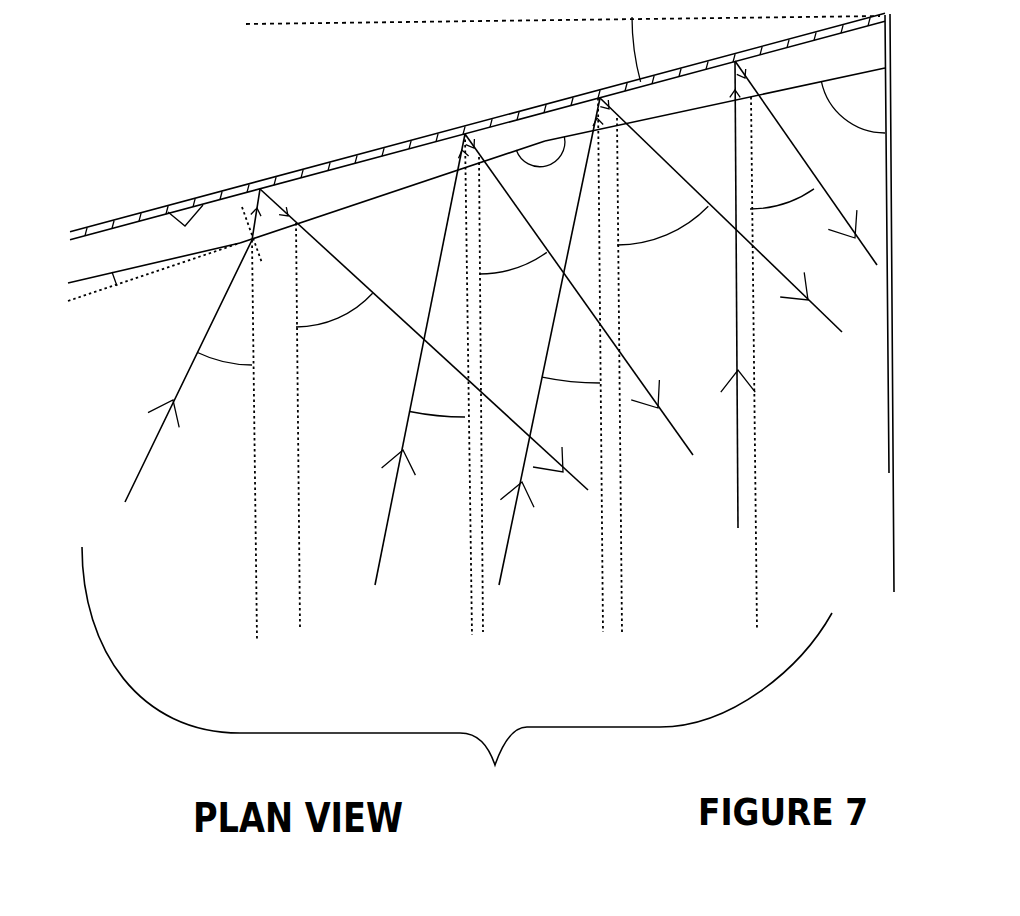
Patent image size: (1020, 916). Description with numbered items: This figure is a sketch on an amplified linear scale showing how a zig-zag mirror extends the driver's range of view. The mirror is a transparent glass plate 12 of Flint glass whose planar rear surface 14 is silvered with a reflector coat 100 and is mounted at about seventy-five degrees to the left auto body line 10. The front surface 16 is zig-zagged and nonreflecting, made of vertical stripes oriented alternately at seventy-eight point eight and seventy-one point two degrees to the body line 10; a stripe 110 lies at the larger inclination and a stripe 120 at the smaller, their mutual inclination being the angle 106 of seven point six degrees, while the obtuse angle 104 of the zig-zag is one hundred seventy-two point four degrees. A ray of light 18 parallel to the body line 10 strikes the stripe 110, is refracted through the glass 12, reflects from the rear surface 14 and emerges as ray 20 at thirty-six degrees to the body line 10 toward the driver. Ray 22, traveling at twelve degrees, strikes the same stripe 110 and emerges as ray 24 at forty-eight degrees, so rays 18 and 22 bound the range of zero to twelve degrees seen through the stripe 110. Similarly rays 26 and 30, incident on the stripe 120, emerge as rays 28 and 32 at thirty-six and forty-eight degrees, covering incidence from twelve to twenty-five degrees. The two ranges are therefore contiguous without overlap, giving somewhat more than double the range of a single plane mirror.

The auto body line 10 is at (893, 510).
The glass plate 12 is at (477, 307).
The rear surface 14 is at (168, 212).
The front surface 16 is at (457, 674).
The ray of light 18 is at (735, 322).
The emerging ray 20 is at (807, 345).
The ray 22 is at (551, 365).
The emerging ray 24 is at (721, 365).
The ray 26 is at (414, 389).
The emerging ray 28 is at (588, 383).
The ray 30 is at (192, 414).
The emerging ray 32 is at (427, 408).
The reflector coat 100 is at (435, 140).
The obtuse angle 104 is at (543, 173).
The angle of mutual inclination 106 is at (113, 280).
The front surface stripe 110 is at (645, 120).
The front surface stripe 120 is at (412, 185).